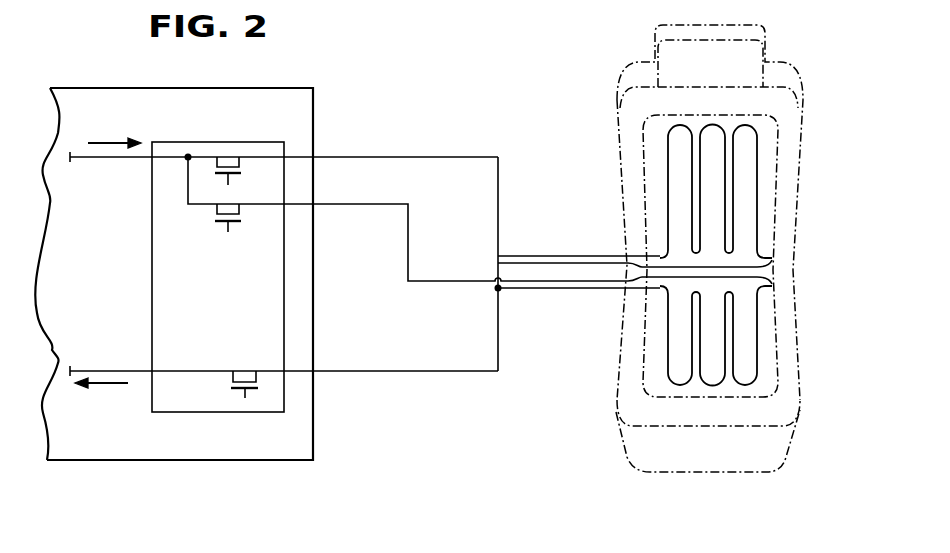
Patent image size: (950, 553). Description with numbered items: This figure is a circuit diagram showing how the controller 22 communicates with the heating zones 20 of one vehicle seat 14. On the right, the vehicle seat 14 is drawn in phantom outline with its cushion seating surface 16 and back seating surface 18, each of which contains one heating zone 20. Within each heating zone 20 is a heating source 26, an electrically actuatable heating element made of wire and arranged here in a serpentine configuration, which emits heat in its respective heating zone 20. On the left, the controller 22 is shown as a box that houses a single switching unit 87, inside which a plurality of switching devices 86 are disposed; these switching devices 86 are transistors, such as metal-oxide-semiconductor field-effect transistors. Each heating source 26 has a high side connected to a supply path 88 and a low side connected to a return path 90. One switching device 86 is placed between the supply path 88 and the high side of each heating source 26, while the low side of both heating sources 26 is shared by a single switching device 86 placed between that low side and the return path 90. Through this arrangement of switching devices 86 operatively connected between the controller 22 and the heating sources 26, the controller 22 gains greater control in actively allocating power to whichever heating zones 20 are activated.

The vehicle seat 14 is at (773, 55).
The cushion seating surface 16 is at (788, 392).
The back seating surface 18 is at (790, 115).
The heating zone 20 is at (778, 157).
The controller 22 is at (313, 88).
The heating source 26 is at (757, 202).
The switching device 86 is at (242, 218).
The switching unit 87 is at (193, 142).
The supply path 88 is at (68, 137).
The return path 90 is at (121, 385).